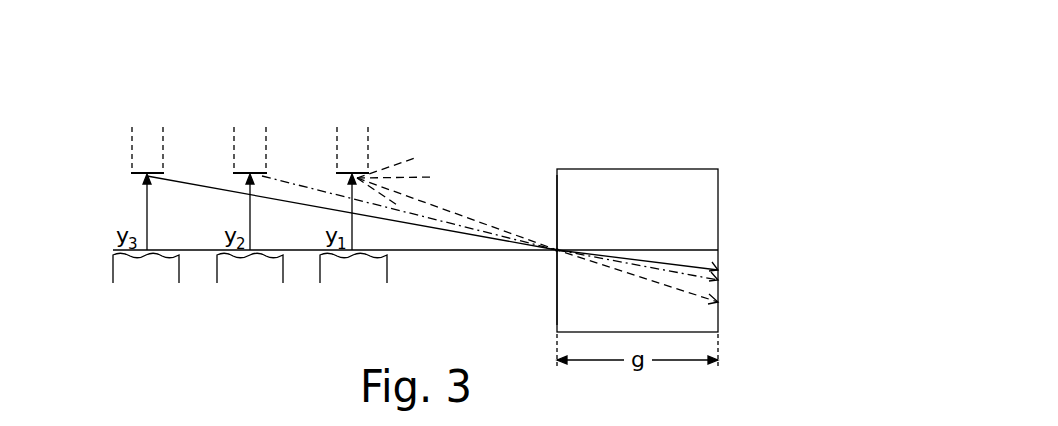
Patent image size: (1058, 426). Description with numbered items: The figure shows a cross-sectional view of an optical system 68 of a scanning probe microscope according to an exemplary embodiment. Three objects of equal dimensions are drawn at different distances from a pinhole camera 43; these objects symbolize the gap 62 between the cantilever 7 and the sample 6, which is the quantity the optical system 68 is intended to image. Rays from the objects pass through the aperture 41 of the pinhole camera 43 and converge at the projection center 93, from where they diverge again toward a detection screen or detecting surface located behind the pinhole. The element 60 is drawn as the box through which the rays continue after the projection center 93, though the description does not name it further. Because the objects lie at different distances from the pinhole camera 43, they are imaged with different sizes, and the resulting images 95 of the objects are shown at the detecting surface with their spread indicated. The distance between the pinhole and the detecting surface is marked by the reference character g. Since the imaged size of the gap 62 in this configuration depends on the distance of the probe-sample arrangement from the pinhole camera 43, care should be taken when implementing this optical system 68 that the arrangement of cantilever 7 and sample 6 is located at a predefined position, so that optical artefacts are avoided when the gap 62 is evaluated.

The sample 6 is at (150, 258).
The cantilever 7 is at (147, 147).
The gap 62 is at (250, 213).
The aperture 41 is at (557, 243).
The pinhole camera 43 is at (555, 185).
The lens 60 is at (630, 169).
The optical system 68 is at (695, 142).
The projection center 93 is at (554, 252).
The images 95 is at (729, 252).